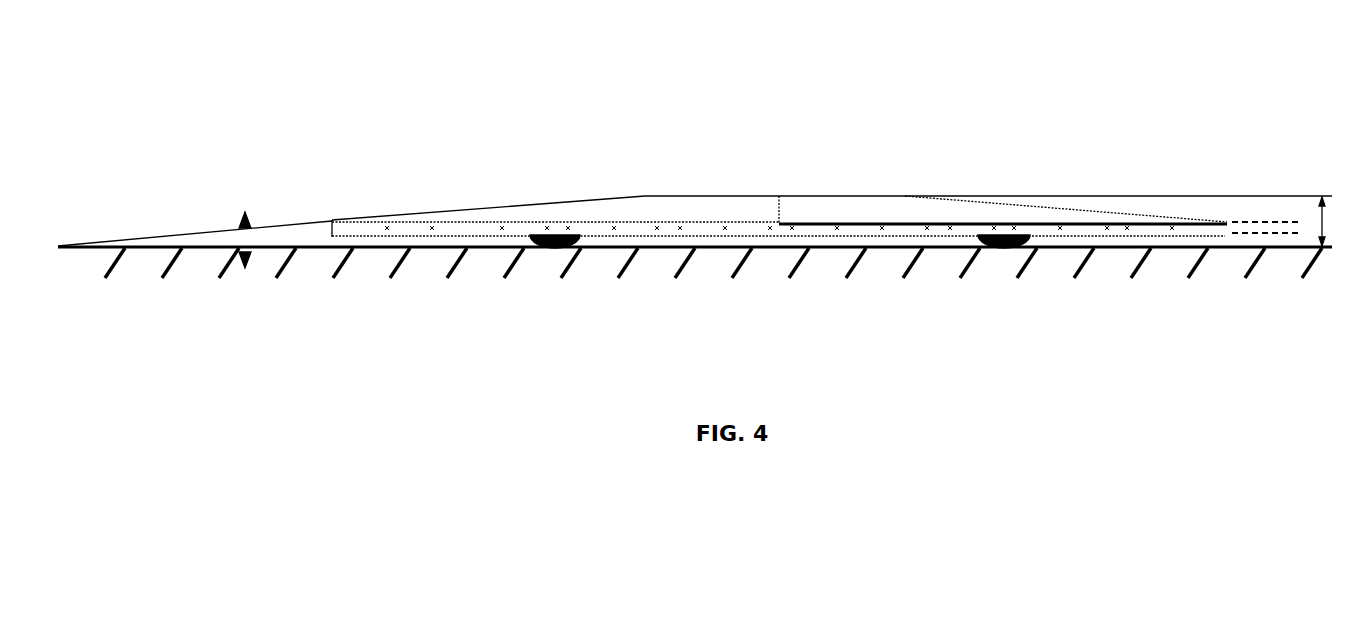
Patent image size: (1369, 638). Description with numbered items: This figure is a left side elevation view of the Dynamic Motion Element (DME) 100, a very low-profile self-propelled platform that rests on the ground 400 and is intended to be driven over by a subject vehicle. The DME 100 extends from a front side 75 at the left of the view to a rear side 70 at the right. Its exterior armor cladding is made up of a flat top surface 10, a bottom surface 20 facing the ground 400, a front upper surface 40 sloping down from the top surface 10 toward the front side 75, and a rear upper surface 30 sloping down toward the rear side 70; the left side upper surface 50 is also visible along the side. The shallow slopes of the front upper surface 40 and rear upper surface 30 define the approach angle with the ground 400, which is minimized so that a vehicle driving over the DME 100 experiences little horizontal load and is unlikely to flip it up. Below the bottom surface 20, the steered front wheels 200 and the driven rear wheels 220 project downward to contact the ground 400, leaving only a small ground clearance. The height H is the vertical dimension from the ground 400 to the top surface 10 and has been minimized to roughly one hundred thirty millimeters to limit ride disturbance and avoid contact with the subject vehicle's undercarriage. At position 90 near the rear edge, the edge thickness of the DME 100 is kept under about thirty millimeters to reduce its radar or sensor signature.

The Dynamic Motion Element 100 is at (438, 110).
The top surface 10 is at (843, 196).
The bottom surface 20 is at (432, 237).
The rear upper surface 30 is at (1062, 210).
The front upper surface 40 is at (520, 206).
The left side upper surface 50 is at (801, 210).
The rear side 70 is at (1236, 221).
The front side 75 is at (328, 227).
The edge thickness position 90 is at (1246, 234).
The front wheels 200 is at (555, 247).
The rear wheels 220 is at (1004, 247).
The ground 400 is at (212, 249).
The height H is at (1320, 221).